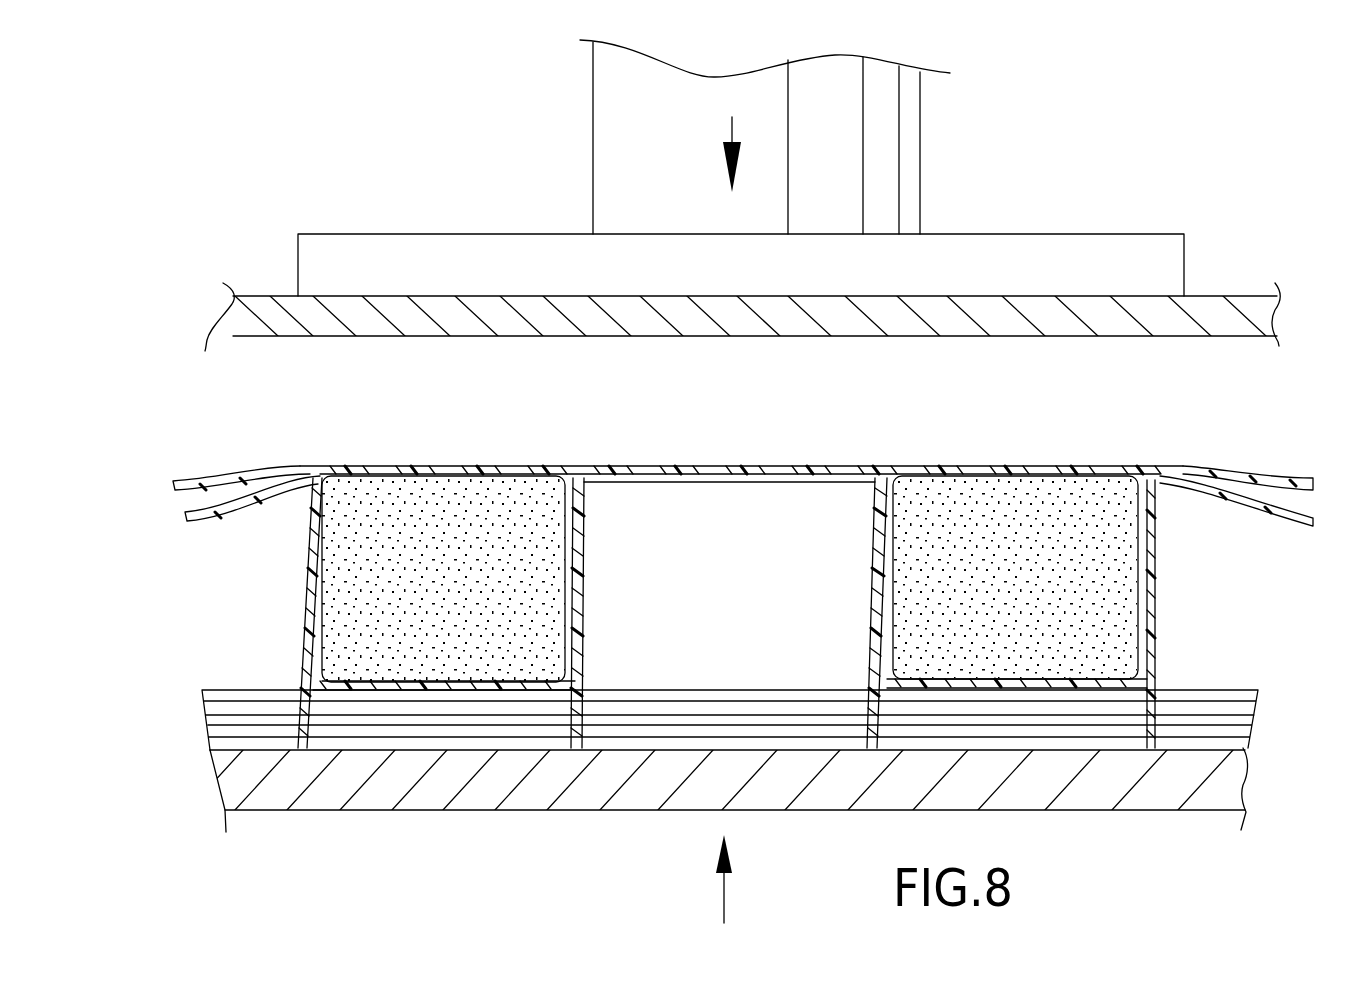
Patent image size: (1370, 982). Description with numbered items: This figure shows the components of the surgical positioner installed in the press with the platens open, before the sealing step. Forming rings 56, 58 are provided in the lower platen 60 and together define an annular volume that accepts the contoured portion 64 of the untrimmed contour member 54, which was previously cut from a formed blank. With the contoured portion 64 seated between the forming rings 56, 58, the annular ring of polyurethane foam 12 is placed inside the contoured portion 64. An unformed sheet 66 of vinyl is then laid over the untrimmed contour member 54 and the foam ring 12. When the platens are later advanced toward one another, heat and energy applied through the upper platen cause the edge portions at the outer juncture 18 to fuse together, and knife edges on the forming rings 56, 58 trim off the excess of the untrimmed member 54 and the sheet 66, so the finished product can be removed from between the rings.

The outer juncture 18 is at (1218, 305).
The lower platen 60 is at (1186, 792).
The unformed sheet 66 is at (1295, 474).
The untrimmed contour member 54 is at (1290, 522).
The forming ring 58 is at (877, 567).
The forming ring 56 is at (1155, 577).
The contoured portion 64 is at (1140, 620).
The annular ring of polyurethane foam 12 is at (1030, 594).